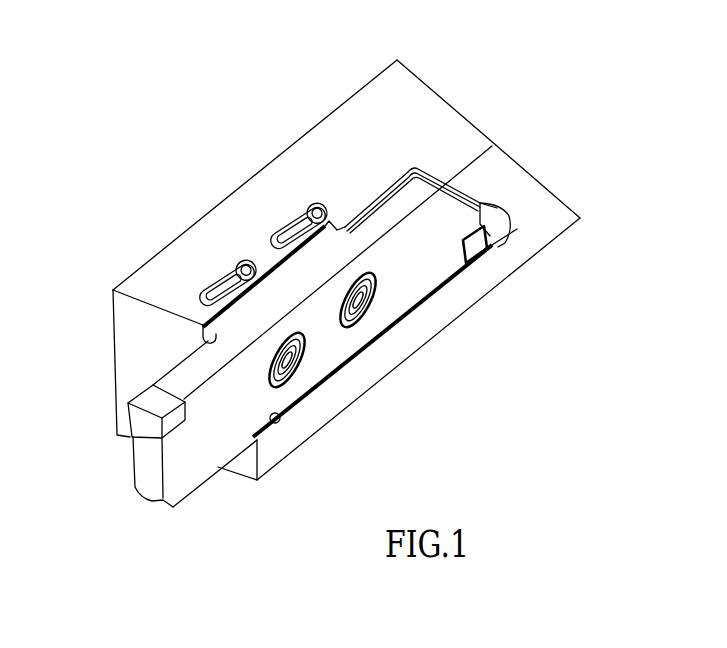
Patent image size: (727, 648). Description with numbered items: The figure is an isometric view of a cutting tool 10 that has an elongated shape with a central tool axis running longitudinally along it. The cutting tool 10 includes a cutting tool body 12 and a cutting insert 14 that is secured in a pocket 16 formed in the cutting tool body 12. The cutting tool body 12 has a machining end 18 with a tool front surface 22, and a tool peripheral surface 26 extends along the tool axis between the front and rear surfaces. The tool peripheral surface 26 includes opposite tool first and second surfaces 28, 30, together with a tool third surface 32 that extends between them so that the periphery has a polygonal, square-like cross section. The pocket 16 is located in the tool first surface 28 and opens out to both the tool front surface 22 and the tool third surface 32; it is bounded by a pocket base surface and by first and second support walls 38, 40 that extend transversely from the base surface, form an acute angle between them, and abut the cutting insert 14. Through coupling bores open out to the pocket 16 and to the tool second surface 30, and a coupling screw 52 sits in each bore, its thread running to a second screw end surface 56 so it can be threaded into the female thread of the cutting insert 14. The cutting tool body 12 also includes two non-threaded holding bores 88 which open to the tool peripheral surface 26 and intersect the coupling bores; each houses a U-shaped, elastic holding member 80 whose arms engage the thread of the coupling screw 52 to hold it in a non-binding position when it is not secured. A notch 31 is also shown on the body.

The cutting tool 10 is at (183, 165).
The cutting tool body 12 is at (190, 233).
The cutting insert 14 is at (196, 498).
The pocket 16 is at (497, 231).
The machining end 18 is at (161, 531).
The tool front surface 22 is at (131, 340).
The tool peripheral surface 26 is at (428, 137).
The tool first surface 28 is at (555, 217).
The tool second surface 30 is at (418, 433).
The notch 31 is at (243, 462).
The tool third surface 32 is at (405, 93).
The first support wall 38 is at (283, 428).
The second support wall 40 is at (480, 195).
The coupling screw 52 is at (375, 322).
The second screw end surface 56 is at (378, 294).
The holding member 80 is at (287, 213).
The holding bore 88 is at (318, 200).